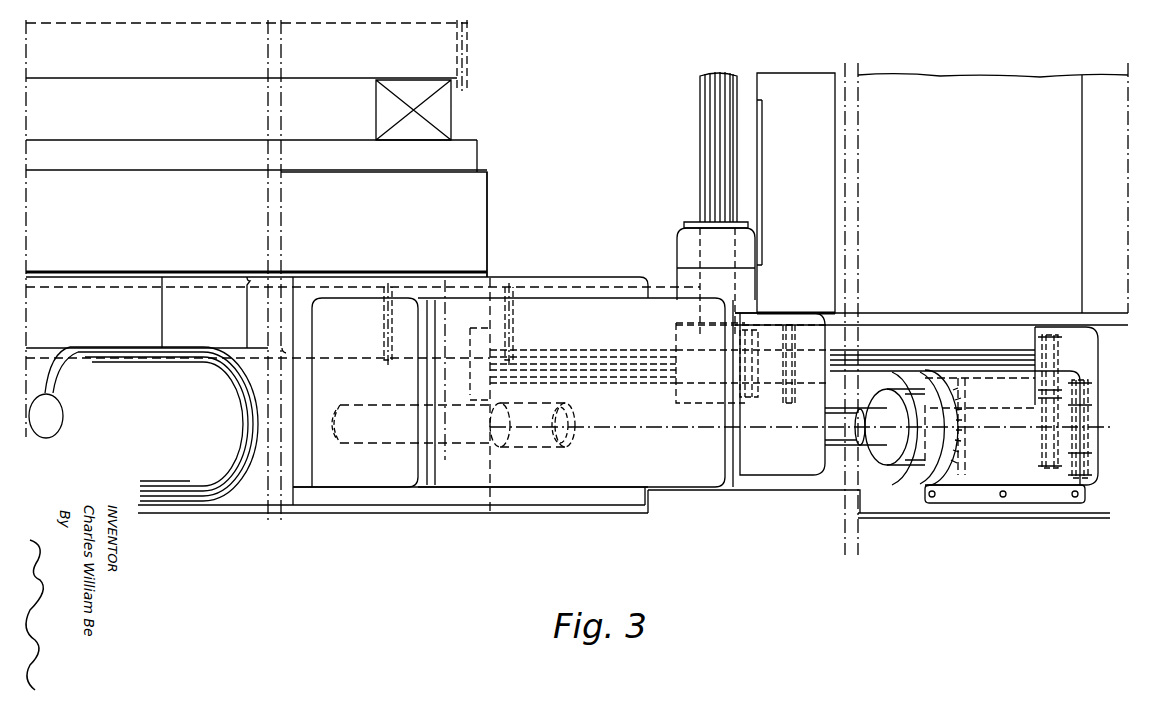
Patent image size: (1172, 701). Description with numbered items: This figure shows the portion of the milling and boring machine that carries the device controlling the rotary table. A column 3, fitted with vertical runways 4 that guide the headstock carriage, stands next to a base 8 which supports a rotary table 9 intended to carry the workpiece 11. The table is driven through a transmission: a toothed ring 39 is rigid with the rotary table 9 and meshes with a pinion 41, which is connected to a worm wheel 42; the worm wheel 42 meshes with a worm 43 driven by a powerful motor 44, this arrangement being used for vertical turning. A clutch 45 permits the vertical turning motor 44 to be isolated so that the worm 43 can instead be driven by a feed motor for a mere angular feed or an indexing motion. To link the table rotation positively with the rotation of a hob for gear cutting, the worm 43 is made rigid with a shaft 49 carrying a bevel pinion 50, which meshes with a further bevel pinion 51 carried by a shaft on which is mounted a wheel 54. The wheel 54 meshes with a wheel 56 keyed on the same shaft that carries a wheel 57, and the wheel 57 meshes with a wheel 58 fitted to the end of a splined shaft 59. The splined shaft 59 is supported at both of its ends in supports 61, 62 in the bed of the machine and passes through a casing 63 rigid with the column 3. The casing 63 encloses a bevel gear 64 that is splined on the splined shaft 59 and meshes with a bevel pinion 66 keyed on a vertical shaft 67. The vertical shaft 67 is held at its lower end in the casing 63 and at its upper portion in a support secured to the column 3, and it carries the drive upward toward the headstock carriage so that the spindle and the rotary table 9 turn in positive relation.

The column 3 is at (942, 82).
The vertical runways 4 is at (838, 93).
The base 8 is at (242, 506).
The rotary table 9 is at (487, 197).
The workpiece 11 is at (448, 57).
The toothed ring 39 is at (82, 288).
The pinion 41 is at (384, 328).
The worm wheel 42 is at (340, 412).
The worm 43 is at (800, 425).
The motor 44 is at (106, 376).
The clutch 45 is at (355, 488).
The shaft 49 is at (862, 445).
The bevel pinion 50 is at (918, 487).
The bevel pinion 51 is at (957, 487).
The wheel 54 is at (1100, 487).
The wheel 56 is at (1090, 405).
The wheel 57 is at (1050, 470).
The wheel 58 is at (1050, 335).
The splined shaft 59 is at (878, 354).
The support 61 is at (1100, 347).
The support 62 is at (675, 342).
The casing 63 is at (782, 392).
The bevel gear 64 is at (740, 388).
The bevel pinion 66 is at (690, 305).
The vertical shaft 67 is at (707, 101).